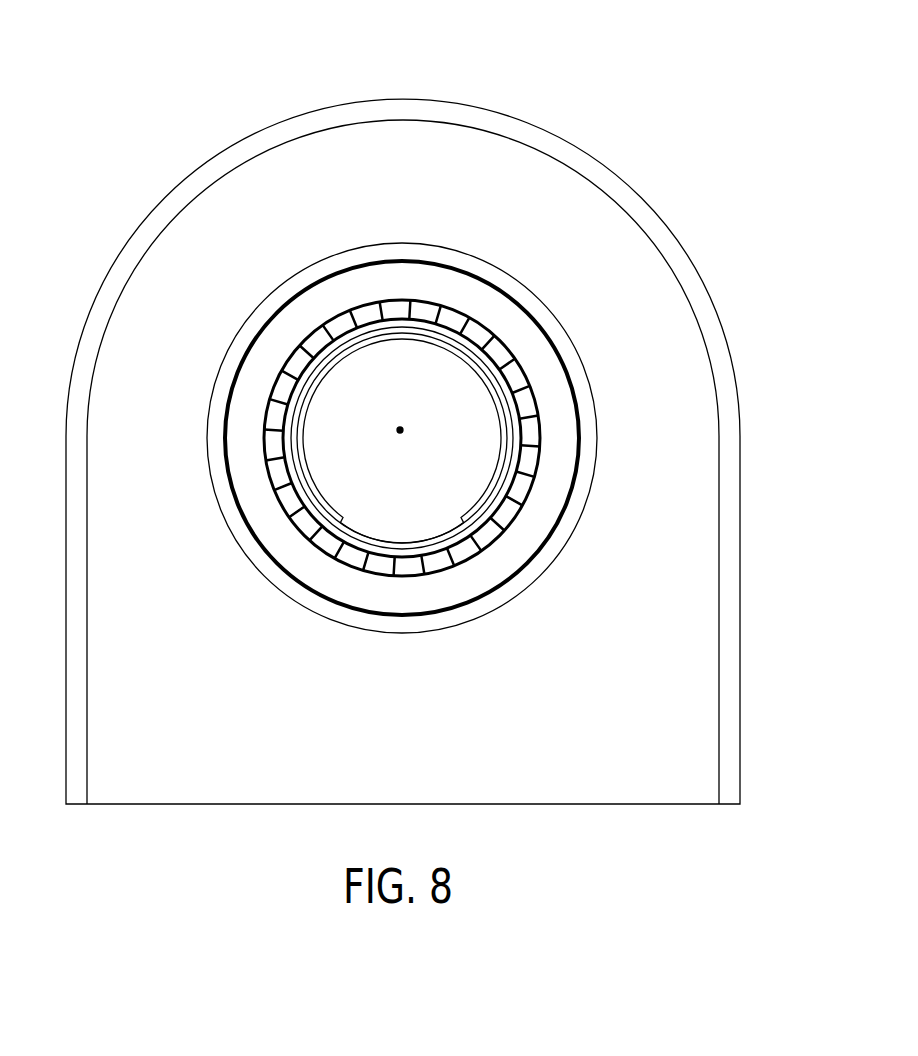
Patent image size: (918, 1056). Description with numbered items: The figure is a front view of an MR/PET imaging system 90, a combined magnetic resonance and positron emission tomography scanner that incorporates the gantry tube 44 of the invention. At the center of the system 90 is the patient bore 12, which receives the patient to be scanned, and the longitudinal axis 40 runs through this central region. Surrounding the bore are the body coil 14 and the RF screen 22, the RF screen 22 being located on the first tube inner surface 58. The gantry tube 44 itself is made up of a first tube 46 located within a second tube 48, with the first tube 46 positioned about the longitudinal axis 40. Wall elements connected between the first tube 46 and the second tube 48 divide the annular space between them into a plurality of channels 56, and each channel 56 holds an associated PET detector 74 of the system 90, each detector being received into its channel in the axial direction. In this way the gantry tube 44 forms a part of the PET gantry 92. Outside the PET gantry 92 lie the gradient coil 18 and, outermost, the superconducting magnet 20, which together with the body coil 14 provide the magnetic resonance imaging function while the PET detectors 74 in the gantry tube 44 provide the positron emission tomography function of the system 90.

The MR/PET imaging system 90 is at (122, 88).
The superconducting magnet 20 is at (542, 182).
The gradient coil 18 is at (497, 307).
The gantry tube 44 is at (333, 310).
The PET gantry 92 is at (372, 302).
The first tube inner surface 58 is at (498, 363).
The PET detector 74 is at (430, 312).
The channel 56 is at (303, 352).
The first tube 46 is at (360, 572).
The second tube 48 is at (387, 580).
The RF screen 22 is at (512, 400).
The body coil 14 is at (508, 435).
The patient bore 12 is at (373, 477).
The longitudinal axis 40 is at (400, 430).